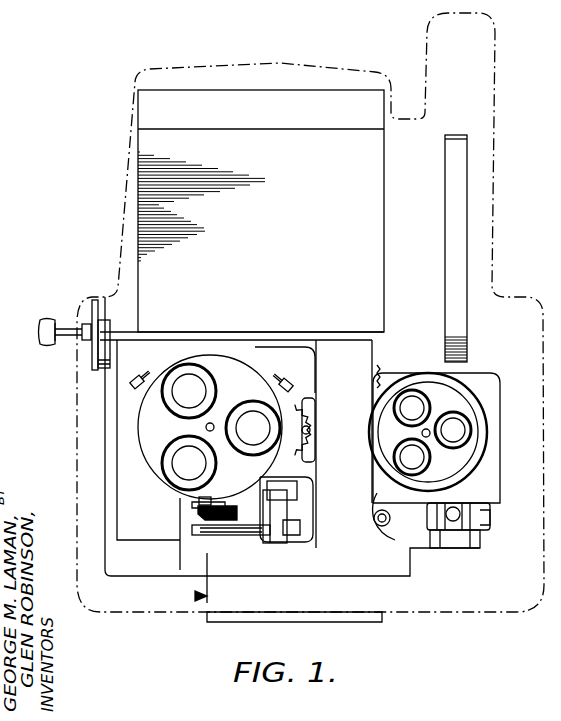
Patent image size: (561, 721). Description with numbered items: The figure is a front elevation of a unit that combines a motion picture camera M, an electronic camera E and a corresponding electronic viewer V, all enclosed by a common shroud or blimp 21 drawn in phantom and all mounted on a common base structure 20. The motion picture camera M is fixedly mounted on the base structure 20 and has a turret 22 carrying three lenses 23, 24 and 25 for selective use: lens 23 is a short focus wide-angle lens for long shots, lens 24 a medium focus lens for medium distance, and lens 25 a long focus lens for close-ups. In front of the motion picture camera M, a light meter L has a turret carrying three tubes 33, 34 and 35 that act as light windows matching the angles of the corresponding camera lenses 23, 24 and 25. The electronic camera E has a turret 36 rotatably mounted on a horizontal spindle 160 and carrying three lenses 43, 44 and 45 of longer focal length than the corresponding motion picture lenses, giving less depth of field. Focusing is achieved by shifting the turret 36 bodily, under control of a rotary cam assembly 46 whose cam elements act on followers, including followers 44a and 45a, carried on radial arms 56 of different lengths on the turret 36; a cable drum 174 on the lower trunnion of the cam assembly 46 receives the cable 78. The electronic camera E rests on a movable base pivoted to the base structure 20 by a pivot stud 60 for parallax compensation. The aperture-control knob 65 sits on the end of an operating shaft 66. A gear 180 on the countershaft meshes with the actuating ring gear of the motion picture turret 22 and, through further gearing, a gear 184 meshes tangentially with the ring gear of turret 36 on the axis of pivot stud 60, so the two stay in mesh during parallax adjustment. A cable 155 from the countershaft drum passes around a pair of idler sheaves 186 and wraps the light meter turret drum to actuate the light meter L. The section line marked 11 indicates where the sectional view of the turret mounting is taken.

The shroud or blimp 21 is at (496, 73).
The electronic viewer V is at (138, 153).
The turret 22 is at (467, 395).
The base structure 20 is at (453, 580).
The knob 65 is at (44, 319).
The operating shaft 66 is at (67, 328).
The electronic camera E is at (251, 338).
The turret 36 is at (138, 420).
The horizontal spindle 160 is at (214, 423).
The lens 45 is at (178, 371).
The lens 44 is at (271, 452).
The lens 43 is at (172, 459).
The section line 11 is at (192, 596).
The radial arms 56 is at (148, 378).
The follower 45a is at (130, 382).
The gear 184 is at (300, 442).
The gear 180 is at (378, 367).
The motion picture camera M is at (480, 374).
The lens 25 is at (409, 390).
The lens 24 is at (461, 428).
The lens 23 is at (419, 458).
The idler sheaves 186 is at (379, 514).
The cable 155 is at (398, 528).
The light meter L is at (466, 497).
The tube 34 is at (433, 531).
The tube 33 is at (453, 533).
The tube 35 is at (483, 526).
The rotary cam assembly 46 is at (198, 517).
The follower 44a is at (200, 503).
The cable drum 174 is at (202, 530).
The cable 78 is at (257, 535).
The pivot stud 60 is at (300, 513).